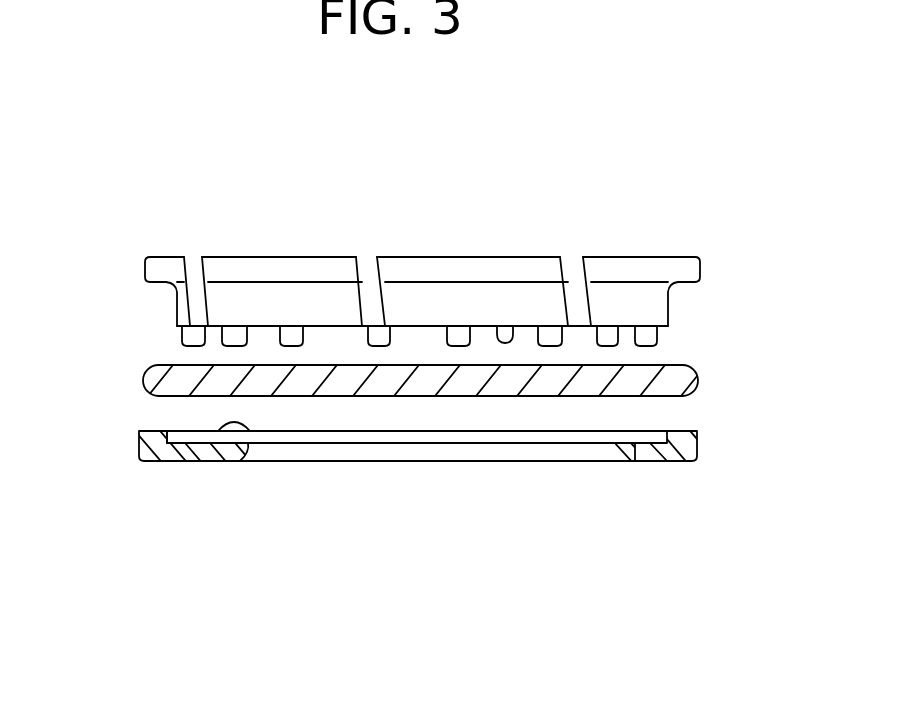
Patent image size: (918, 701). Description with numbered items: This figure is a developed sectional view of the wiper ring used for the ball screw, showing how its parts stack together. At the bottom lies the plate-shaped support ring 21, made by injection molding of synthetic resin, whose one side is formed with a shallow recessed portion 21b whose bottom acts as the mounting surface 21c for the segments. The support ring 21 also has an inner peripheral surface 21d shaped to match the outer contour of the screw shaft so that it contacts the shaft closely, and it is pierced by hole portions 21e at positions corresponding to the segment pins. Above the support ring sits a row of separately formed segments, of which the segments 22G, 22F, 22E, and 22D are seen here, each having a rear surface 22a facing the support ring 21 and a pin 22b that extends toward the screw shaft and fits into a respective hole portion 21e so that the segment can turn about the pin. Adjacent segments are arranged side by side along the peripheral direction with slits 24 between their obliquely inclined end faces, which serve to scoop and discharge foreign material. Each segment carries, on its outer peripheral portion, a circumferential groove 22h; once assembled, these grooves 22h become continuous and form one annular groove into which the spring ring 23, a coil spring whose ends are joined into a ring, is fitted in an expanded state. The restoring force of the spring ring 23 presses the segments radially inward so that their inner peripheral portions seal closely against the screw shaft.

The support ring 21 is at (695, 450).
The shallow recessed portion 21b is at (177, 430).
The mounting surface 21c is at (250, 432).
The inner peripheral surface 21d is at (618, 450).
The hole portion 21e is at (648, 450).
The rear surface 22a is at (512, 340).
The pin 22b is at (650, 336).
The groove 22h is at (648, 303).
The segment 22D is at (650, 267).
The segment 22E is at (449, 266).
The segment 22F is at (271, 262).
The segment 22G is at (163, 259).
The spring ring 23 is at (698, 382).
The slit 24 is at (190, 265).